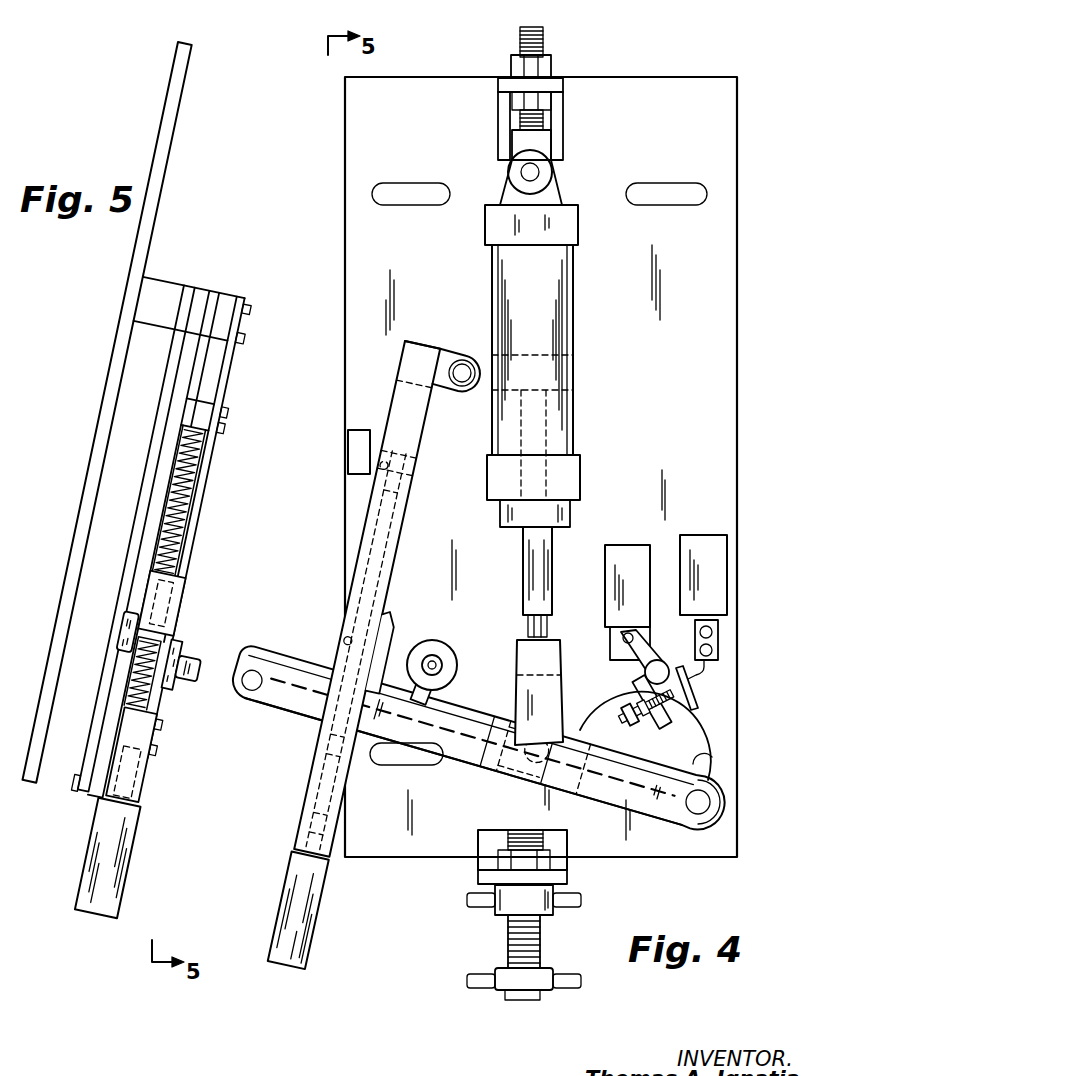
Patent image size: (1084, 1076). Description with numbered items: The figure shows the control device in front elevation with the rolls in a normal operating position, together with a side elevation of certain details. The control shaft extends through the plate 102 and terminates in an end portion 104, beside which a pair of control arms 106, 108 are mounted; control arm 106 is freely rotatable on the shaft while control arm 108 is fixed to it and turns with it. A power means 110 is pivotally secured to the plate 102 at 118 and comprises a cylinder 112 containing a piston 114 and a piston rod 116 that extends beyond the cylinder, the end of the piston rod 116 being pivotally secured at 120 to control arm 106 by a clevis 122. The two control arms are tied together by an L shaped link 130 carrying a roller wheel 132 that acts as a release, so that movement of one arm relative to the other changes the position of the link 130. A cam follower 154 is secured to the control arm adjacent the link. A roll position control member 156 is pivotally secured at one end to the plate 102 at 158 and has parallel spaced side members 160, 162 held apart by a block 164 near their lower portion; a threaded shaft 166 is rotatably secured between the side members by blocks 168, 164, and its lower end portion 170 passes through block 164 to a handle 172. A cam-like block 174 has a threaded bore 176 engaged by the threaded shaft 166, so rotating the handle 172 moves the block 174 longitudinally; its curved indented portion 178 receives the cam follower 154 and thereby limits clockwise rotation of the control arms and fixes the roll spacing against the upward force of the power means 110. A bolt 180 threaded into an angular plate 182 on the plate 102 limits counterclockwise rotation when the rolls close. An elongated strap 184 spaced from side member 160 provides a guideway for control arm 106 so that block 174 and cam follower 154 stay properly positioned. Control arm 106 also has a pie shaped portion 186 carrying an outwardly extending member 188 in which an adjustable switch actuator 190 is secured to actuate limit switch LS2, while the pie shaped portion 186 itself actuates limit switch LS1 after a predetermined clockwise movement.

In FIG. 4, the plate 102 is at (656, 73).
In FIG. 5, the plate 102 is at (173, 158).
In FIG. 4, the end portion 104 is at (712, 800).
In FIG. 4, the control arm 106 is at (310, 660).
In FIG. 5, the control arm 106 is at (128, 615).
In FIG. 4, the control arm 108 is at (298, 703).
In FIG. 5, the control arm 108 is at (182, 650).
In FIG. 4, the power means 110 is at (583, 282).
In FIG. 4, the cylinder 112 is at (575, 318).
In FIG. 4, the piston 114 is at (566, 393).
In FIG. 4, the piston rod 116 is at (522, 562).
In FIG. 4, the pivot 118 is at (540, 172).
In FIG. 4, the pivot 120 is at (522, 767).
In FIG. 4, the clevis 122 is at (520, 690).
In FIG. 4, the L shaped link 130 is at (455, 668).
In FIG. 4, the roller wheel 132 is at (444, 652).
In FIG. 4, the cam follower 154 is at (400, 765).
In FIG. 4, the roll position control member 156 is at (392, 387).
In FIG. 5, the roll position control member 156 is at (214, 475).
In FIG. 4, the pivot 158 is at (462, 366).
In FIG. 5, the side member 160 is at (200, 352).
In FIG. 5, the side member 162 is at (226, 378).
In FIG. 4, the block 164 is at (330, 743).
In FIG. 5, the block 164 is at (140, 735).
In FIG. 4, the threaded shaft 166 is at (380, 518).
In FIG. 5, the threaded shaft 166 is at (182, 500).
In FIG. 4, the block 168 is at (384, 470).
In FIG. 5, the block 168 is at (208, 404).
In FIG. 4, the lower end portion 170 is at (322, 800).
In FIG. 5, the lower end portion 170 is at (132, 783).
In FIG. 4, the handle 172 is at (330, 893).
In FIG. 5, the handle 172 is at (130, 860).
In FIG. 4, the cam-like block 174 is at (394, 630).
In FIG. 5, the cam-like block 174 is at (180, 587).
In FIG. 4, the threaded bore 176 is at (354, 638).
In FIG. 5, the threaded bore 176 is at (168, 610).
In FIG. 4, the curved indented portion 178 is at (420, 660).
In FIG. 4, the bolt 180 is at (508, 940).
In FIG. 4, the angular plate 182 is at (480, 864).
In FIG. 5, the elongated strap 184 is at (178, 348).
In FIG. 4, the pie shaped portion 186 is at (675, 740).
In FIG. 4, the outwardly extending member 188 is at (636, 682).
In FIG. 4, the adjustable switch actuator 190 is at (626, 718).
In FIG. 4, the limit switch LS1 is at (602, 546).
In FIG. 4, the limit switch LS2 is at (679, 536).